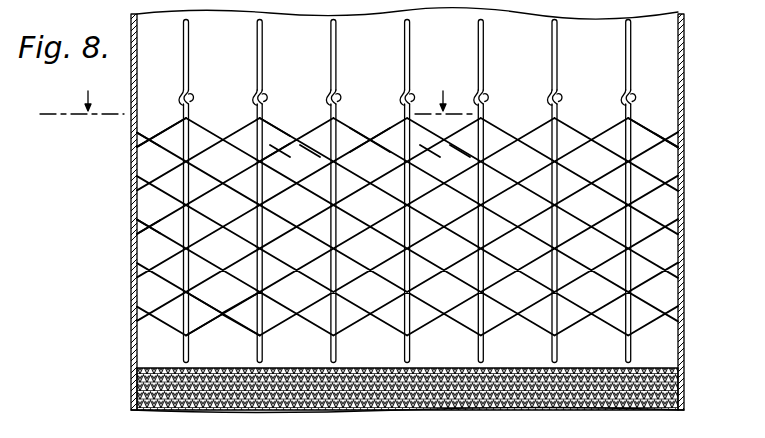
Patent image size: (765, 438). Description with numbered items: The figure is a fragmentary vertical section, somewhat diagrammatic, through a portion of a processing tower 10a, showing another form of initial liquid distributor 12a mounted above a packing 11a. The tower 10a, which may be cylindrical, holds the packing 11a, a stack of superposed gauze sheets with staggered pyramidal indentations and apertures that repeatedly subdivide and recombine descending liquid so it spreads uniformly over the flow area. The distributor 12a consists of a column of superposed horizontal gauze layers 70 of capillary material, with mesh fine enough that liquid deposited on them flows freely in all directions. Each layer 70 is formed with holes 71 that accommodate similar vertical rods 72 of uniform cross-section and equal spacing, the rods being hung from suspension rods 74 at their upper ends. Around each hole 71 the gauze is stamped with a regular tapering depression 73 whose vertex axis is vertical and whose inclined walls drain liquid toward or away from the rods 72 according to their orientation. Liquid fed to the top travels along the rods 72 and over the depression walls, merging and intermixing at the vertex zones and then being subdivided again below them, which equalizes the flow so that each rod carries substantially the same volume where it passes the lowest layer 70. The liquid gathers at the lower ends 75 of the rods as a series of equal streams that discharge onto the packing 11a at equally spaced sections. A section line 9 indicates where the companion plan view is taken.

The section line 9 is at (256, 92).
The tower 10a is at (684, 97).
The packing 11a is at (606, 411).
The distributor 12a is at (580, 128).
The gauze layers 70 is at (138, 238).
The holes 71 is at (183, 176).
The rods 72 is at (550, 108).
The tapering depressions 73 is at (311, 133).
The suspension rods 74 is at (404, 47).
The lower ends of the rods 75 is at (404, 351).